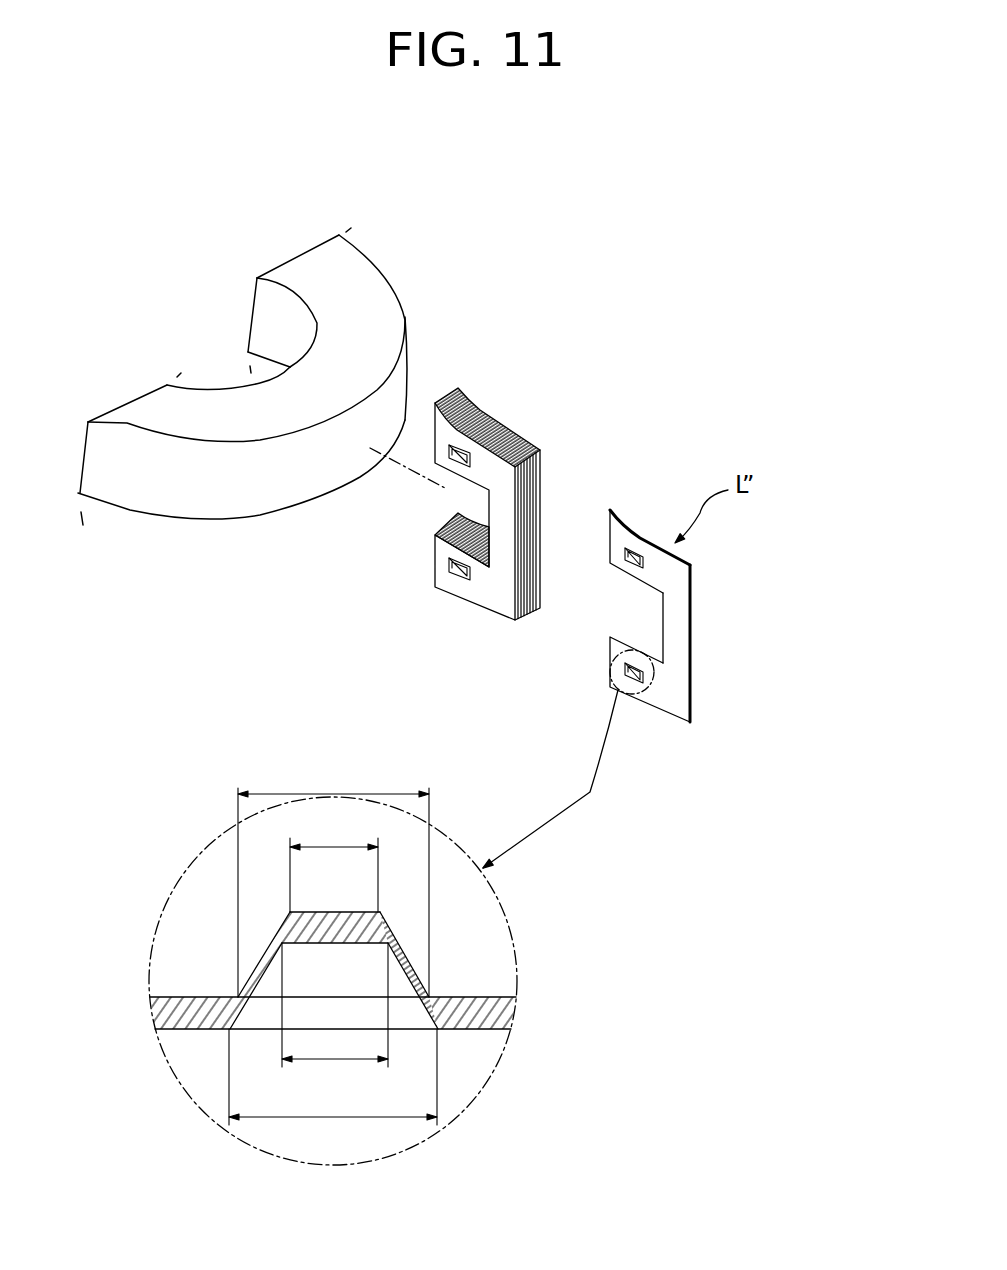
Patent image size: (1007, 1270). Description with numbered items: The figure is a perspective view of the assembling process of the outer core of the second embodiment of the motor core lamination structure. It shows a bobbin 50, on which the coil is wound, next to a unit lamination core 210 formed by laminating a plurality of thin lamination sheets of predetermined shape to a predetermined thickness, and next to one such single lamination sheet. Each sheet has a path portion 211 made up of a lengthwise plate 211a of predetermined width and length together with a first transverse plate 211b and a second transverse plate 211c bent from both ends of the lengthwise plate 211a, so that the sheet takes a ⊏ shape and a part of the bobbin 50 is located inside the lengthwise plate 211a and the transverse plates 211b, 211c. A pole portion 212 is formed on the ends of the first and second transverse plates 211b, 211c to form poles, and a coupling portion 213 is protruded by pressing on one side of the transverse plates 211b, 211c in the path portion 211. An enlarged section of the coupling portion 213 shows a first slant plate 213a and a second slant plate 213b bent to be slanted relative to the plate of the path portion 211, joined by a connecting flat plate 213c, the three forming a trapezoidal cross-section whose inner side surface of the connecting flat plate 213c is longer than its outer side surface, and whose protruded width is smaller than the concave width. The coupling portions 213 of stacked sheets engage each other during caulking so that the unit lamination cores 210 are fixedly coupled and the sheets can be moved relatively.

The bobbin 50 is at (424, 316).
The unit lamination core 210 is at (528, 410).
The path portion 211 is at (733, 632).
The lengthwise plate 211a is at (681, 641).
The first transverse plate 211b is at (667, 563).
The second transverse plate 211c is at (703, 696).
The pole portion 212 is at (613, 533).
The coupling portion 213 is at (358, 907).
The first slant plate 213a is at (414, 972).
The second slant plate 213b is at (252, 973).
The connecting flat plate 213c is at (335, 914).